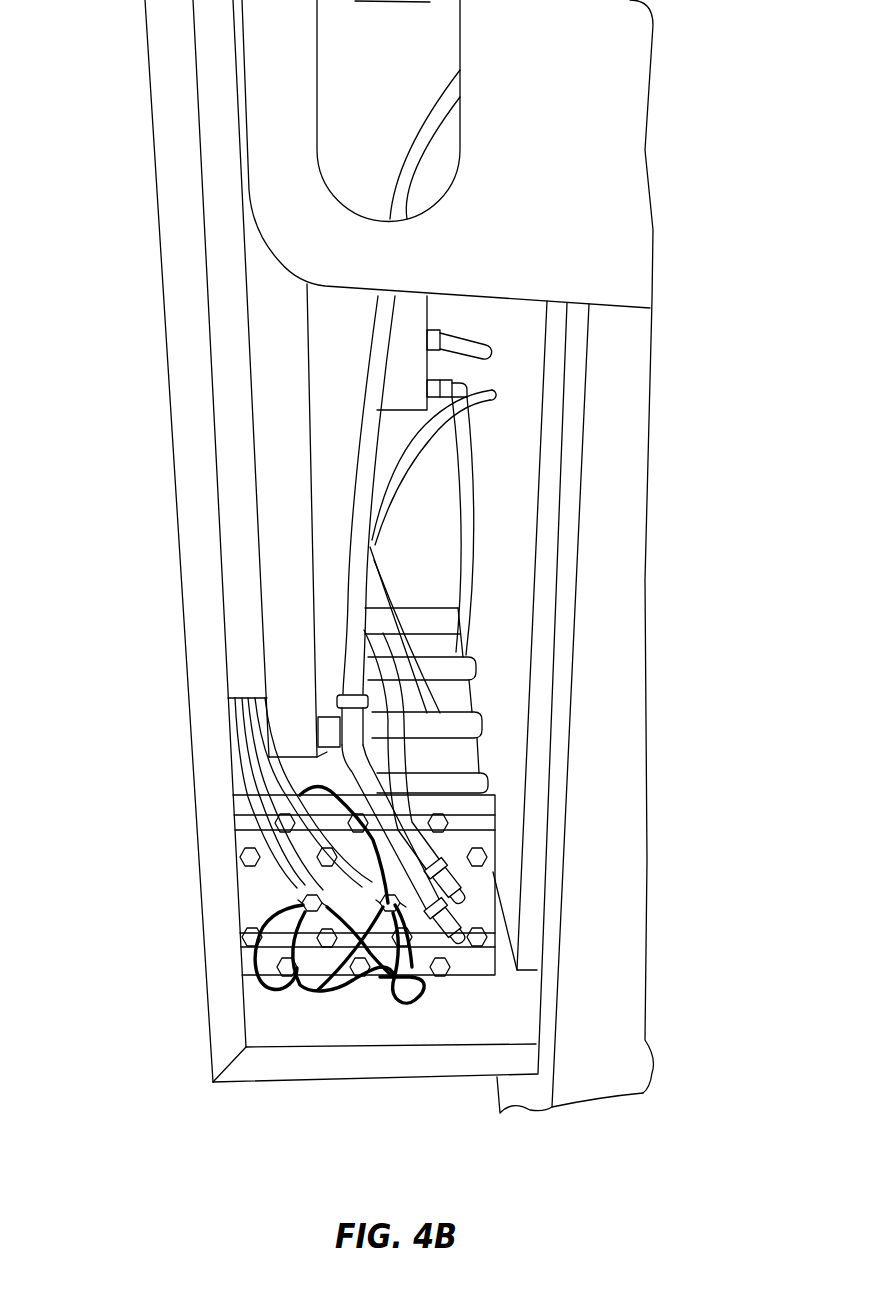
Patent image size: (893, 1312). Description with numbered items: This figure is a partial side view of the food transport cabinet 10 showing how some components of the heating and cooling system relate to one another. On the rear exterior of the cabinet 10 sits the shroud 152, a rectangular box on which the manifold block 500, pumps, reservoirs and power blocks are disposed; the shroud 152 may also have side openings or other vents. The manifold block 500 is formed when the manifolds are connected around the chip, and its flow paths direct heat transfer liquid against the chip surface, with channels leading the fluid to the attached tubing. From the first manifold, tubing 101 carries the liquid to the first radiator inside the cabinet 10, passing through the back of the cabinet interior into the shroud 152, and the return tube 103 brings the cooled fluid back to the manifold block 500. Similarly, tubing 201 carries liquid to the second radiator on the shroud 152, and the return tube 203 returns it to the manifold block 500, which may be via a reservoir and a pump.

The food transport cabinet 10 is at (612, 1025).
The tubing 101 is at (493, 351).
The return tube 103 is at (468, 404).
The shroud 152 is at (385, 1057).
The tubing 201 is at (356, 616).
The return tube 203 is at (283, 606).
The manifold block 500 is at (263, 917).